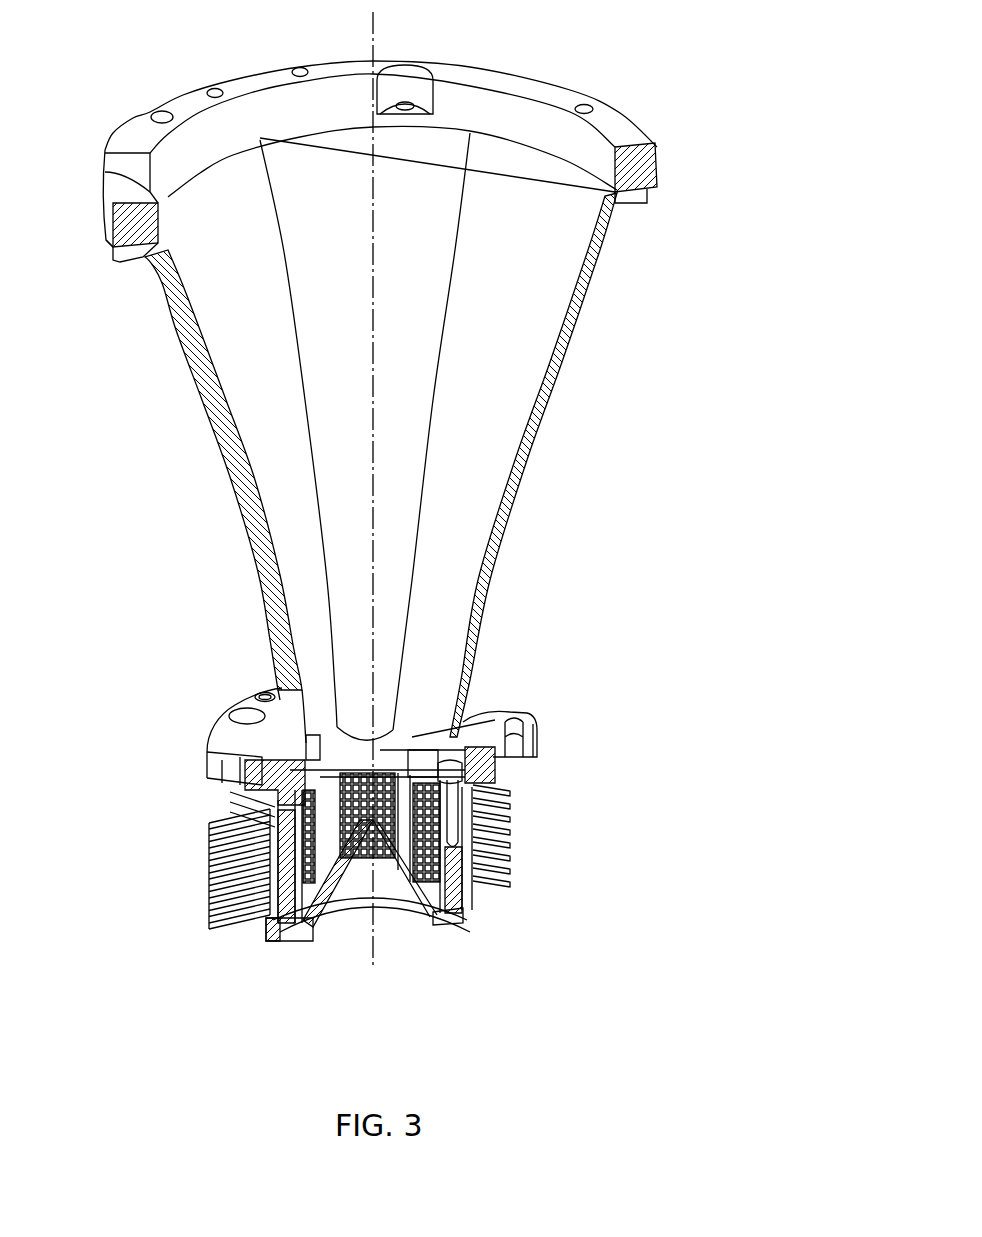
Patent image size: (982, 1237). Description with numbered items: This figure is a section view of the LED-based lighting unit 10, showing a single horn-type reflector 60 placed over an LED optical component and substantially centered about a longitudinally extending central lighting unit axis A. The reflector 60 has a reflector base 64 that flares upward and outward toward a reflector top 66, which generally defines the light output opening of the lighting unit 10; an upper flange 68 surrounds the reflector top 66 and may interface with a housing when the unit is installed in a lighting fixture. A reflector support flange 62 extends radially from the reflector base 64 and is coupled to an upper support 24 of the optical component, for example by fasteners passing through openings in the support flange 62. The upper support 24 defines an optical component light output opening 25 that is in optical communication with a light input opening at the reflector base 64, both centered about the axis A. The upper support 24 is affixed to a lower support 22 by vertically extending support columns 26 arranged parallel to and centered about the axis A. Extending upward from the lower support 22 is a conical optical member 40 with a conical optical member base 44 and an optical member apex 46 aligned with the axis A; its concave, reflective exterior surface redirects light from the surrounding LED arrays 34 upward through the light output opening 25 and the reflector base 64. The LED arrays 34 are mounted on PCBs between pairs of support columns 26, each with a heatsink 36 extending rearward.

The LED-based lighting unit 10 is at (728, 186).
The lower support 22 is at (277, 930).
The upper support 24 is at (537, 757).
The optical component light output opening 25 is at (387, 738).
The support columns 26 is at (510, 840).
The LED arrays 34 is at (307, 887).
The heatsink 36 is at (510, 796).
The conical optical member 40 is at (350, 888).
The conical optical member base 44 is at (433, 920).
The optical member apex 46 is at (465, 903).
The horn-type reflector 60 is at (523, 444).
The reflector support flange 62 is at (225, 744).
The reflector base 64 is at (463, 722).
The reflector top 66 is at (641, 203).
The upper flange 68 is at (638, 143).
The lighting unit axis A is at (374, 48).